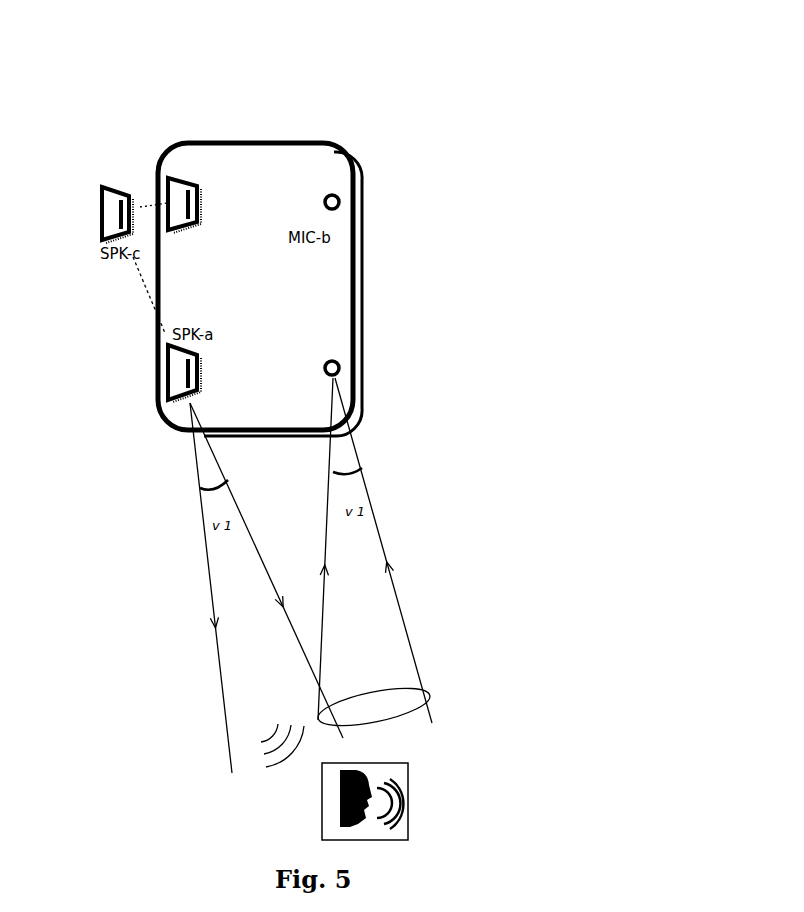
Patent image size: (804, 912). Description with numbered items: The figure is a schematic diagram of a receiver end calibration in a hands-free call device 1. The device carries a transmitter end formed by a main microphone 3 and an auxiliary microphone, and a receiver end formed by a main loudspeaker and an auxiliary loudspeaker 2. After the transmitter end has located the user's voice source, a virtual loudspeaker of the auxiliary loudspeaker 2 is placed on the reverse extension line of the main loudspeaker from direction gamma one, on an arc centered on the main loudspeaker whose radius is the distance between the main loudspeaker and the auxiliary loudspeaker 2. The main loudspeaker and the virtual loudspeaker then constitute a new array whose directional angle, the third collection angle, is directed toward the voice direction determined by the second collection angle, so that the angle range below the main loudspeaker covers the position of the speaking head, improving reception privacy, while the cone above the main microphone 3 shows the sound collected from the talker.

The hands-free call device 1 is at (300, 171).
The auxiliary loudspeaker 2 is at (199, 176).
The main microphone 3 is at (343, 344).